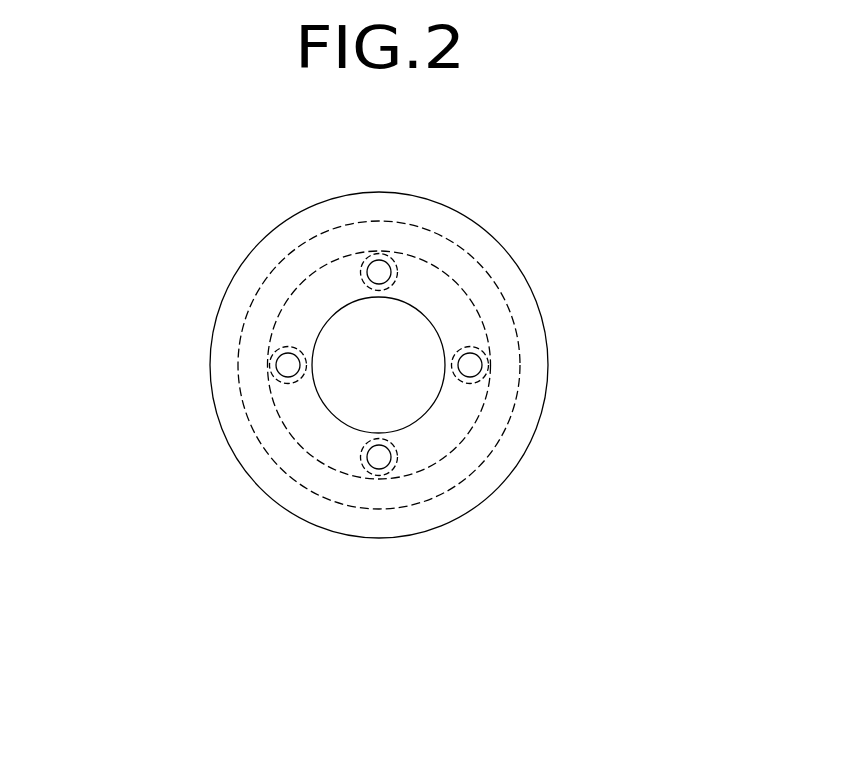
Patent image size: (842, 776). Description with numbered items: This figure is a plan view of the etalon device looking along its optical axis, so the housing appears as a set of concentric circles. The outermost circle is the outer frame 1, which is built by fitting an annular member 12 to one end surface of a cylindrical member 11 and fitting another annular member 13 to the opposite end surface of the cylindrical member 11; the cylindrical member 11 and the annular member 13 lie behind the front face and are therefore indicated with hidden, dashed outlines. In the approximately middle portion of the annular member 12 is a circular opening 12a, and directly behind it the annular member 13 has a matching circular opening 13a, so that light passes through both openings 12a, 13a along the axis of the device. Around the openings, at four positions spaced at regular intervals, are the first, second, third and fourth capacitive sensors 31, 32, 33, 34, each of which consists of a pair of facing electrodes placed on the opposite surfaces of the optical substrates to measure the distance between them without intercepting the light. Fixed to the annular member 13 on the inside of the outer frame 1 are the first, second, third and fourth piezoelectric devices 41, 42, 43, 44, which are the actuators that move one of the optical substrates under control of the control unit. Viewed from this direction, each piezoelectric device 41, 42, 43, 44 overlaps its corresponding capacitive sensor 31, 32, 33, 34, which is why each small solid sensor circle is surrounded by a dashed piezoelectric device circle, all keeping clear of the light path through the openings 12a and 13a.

The outer frame 1 is at (142, 423).
The cylindrical member 11 is at (248, 462).
The annular member 12 is at (280, 452).
The annular member 13 is at (280, 497).
The circular opening 12a is at (328, 322).
The circular opening 13a is at (440, 397).
The first capacitive sensor 31 is at (277, 383).
The second capacitive sensor 32 is at (375, 268).
The third capacitive sensor 33 is at (478, 352).
The fourth capacitive sensor 34 is at (383, 460).
The first piezoelectric device 41 is at (280, 352).
The second piezoelectric device 42 is at (392, 267).
The third piezoelectric device 43 is at (478, 378).
The fourth piezoelectric device 44 is at (370, 463).